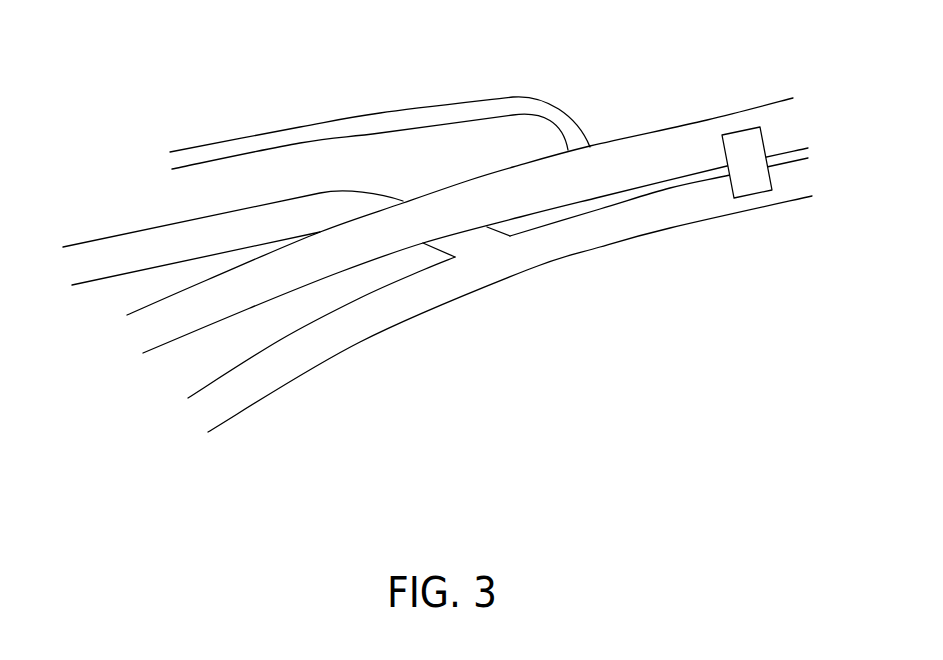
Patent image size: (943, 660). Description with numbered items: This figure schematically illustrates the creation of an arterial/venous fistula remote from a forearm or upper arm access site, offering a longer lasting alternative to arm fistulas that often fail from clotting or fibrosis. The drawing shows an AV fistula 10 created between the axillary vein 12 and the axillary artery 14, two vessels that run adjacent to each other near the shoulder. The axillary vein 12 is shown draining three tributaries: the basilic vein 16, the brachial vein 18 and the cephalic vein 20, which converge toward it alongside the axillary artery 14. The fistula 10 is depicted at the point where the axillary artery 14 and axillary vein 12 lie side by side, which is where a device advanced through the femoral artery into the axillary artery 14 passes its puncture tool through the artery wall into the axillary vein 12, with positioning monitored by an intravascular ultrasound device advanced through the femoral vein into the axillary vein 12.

The AV fistula 10 is at (767, 136).
The axillary vein 12 is at (715, 203).
The axillary artery 14 is at (707, 128).
The basilic vein 16 is at (227, 397).
The brachial vein 18 is at (137, 231).
The cephalic vein 20 is at (271, 131).